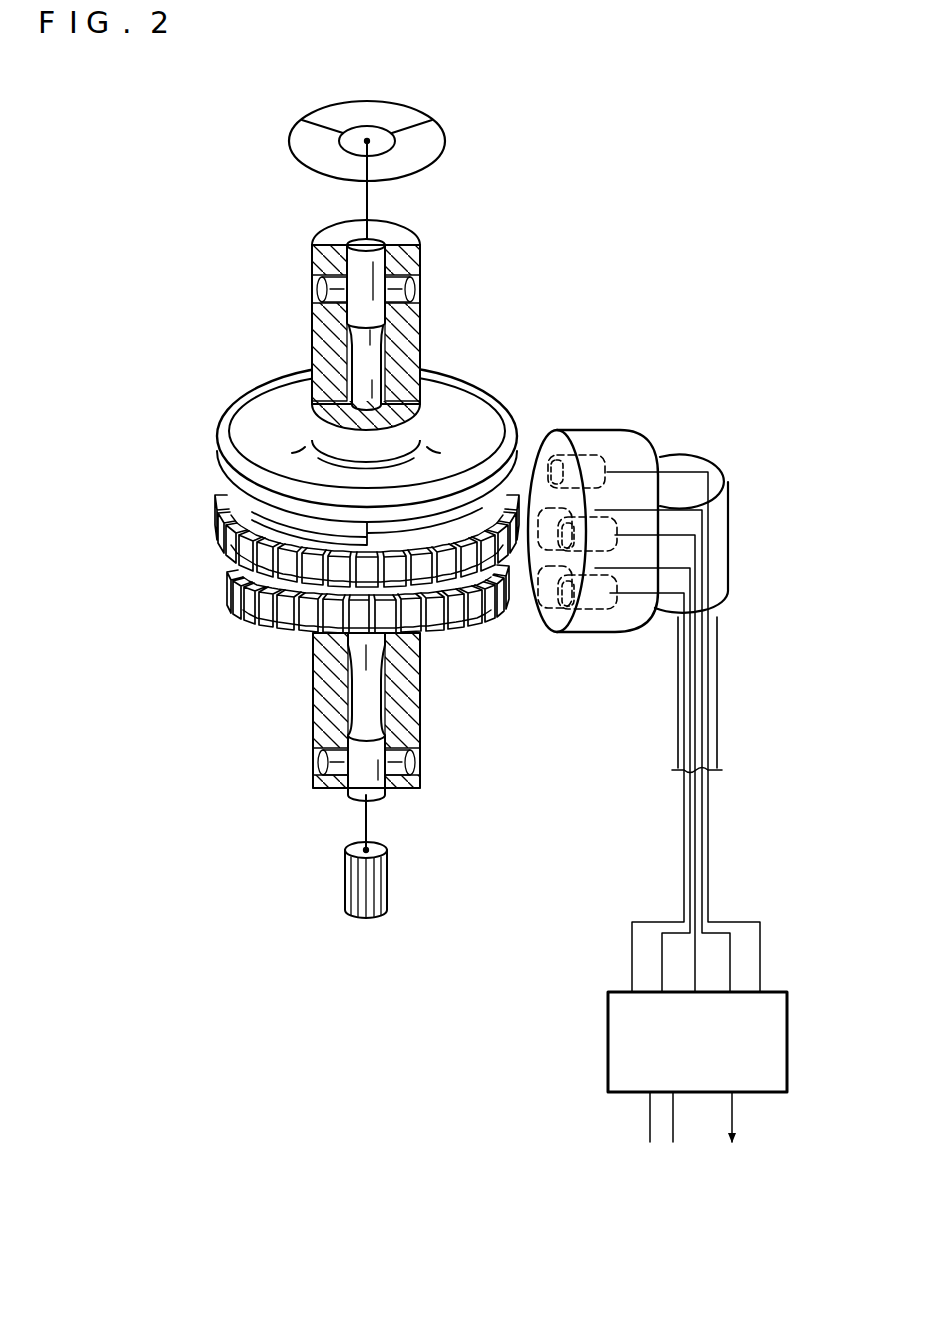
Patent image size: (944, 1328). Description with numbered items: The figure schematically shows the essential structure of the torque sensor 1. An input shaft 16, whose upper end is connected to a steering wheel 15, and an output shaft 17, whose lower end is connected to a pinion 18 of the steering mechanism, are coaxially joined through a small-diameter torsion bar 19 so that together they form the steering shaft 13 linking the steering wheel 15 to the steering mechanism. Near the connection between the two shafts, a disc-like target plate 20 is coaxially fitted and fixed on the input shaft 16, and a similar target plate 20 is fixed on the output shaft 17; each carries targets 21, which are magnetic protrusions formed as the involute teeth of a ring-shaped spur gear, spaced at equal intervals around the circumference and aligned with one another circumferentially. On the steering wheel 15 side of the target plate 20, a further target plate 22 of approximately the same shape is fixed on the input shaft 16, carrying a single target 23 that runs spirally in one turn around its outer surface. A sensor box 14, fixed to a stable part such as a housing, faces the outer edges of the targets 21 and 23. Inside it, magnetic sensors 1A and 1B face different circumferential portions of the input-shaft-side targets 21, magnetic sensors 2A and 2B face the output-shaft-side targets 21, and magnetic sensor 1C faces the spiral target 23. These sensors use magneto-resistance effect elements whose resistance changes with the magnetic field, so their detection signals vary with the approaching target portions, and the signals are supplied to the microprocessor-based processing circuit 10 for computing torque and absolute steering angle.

The torque sensor 1 is at (576, 162).
The processing circuit 10 is at (607, 1043).
The steering shaft 13 is at (425, 308).
The sensor box 14 is at (650, 442).
The steering wheel 15 is at (445, 139).
The input shaft 16 is at (413, 343).
The output shaft 17 is at (420, 710).
The pinion 18 is at (387, 873).
The torsion bar 19 is at (360, 365).
The target plate 20 is at (220, 573).
The targets 21 is at (255, 628).
The target plate 22 is at (273, 407).
The target 23 is at (222, 430).
The magnetic sensor 1A is at (605, 452).
The magnetic sensor 1B is at (542, 510).
The magnetic sensor 1C is at (576, 518).
The magnetic sensor 2A is at (605, 605).
The magnetic sensor 2B is at (537, 608).